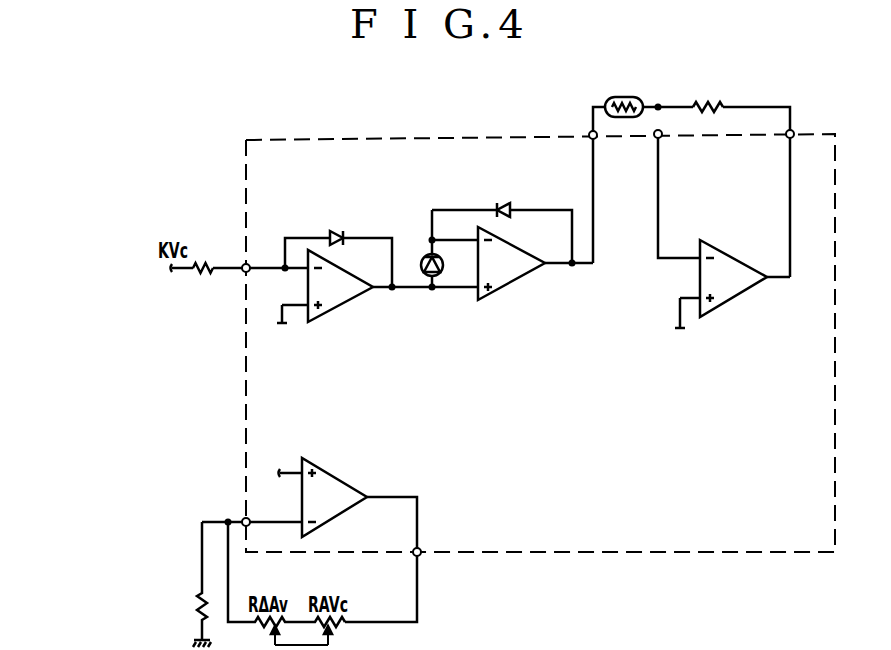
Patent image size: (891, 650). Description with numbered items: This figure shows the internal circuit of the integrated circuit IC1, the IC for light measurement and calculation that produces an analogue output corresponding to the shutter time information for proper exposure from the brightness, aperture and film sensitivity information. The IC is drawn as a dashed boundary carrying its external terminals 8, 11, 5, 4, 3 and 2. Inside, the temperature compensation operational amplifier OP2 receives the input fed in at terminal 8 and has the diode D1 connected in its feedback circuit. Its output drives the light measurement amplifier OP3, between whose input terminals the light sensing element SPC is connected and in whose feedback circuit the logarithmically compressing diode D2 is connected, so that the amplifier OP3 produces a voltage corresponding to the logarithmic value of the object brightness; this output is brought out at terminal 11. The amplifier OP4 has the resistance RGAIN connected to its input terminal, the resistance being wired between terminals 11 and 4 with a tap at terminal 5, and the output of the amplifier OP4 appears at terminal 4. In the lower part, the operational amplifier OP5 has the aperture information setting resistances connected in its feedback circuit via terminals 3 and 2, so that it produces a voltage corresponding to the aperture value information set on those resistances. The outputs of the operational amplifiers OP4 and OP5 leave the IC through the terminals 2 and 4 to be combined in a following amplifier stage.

The terminal 2 is at (415, 550).
The IC1 pin 3 terminal 3 is at (246, 520).
The terminal 4 is at (793, 133).
The IC1 pin 5 terminal 5 is at (661, 139).
The IC1 pin 8 terminal 8 is at (246, 266).
The IC1 pin 11 terminal 11 is at (592, 132).
The IC for light measurement and calculation IC1 is at (820, 297).
The temperature compensation operational amplifier OP2 is at (374, 305).
The light measurement amplifier OP3 is at (512, 263).
The amplifier OP4 is at (724, 249).
The operational amplifier OP5 is at (309, 540).
The diode D1 is at (338, 246).
The logarithmically compressing diode D2 is at (502, 220).
The light sensing element SPC is at (424, 258).
The resistance RGAIN is at (737, 179).